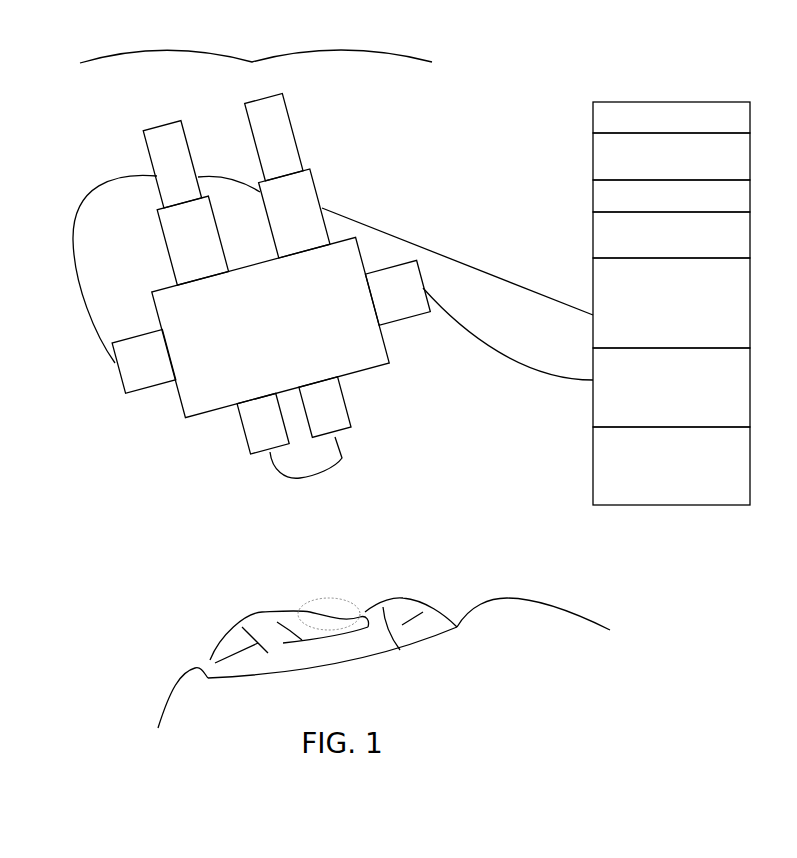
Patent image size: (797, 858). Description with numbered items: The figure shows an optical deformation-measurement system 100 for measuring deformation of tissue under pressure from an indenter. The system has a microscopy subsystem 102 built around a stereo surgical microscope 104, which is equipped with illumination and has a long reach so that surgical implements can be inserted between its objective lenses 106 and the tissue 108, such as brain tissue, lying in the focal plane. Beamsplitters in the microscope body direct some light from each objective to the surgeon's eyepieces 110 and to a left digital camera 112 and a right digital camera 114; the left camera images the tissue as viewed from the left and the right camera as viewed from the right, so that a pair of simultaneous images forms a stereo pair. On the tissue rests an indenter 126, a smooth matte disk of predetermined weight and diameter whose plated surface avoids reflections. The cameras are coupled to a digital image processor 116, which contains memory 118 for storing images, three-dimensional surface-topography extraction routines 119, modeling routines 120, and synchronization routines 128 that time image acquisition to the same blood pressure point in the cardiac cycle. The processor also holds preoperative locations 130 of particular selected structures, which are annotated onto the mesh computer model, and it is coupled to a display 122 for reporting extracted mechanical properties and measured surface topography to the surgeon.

The optical deformation-measurement system 100 is at (689, 68).
The microscopy subsystem 102 is at (252, 62).
The stereo surgical microscope 104 is at (270, 327).
The objective lenses 106 is at (312, 427).
The tissue 108 is at (425, 622).
The surgeon's eyepieces 110 is at (163, 124).
The left digital camera 112 is at (116, 367).
The right digital camera 114 is at (423, 288).
The digital image processor 116 is at (671, 387).
The memory 118 is at (671, 235).
The three-dimensional surface-topography extraction routines 119 is at (671, 156).
The modeling routines 120 is at (671, 117).
The display 122 is at (671, 466).
The indenter 126 is at (332, 598).
The synchronization routines 128 is at (671, 196).
The preoperative locations of selected structures 130 is at (671, 303).